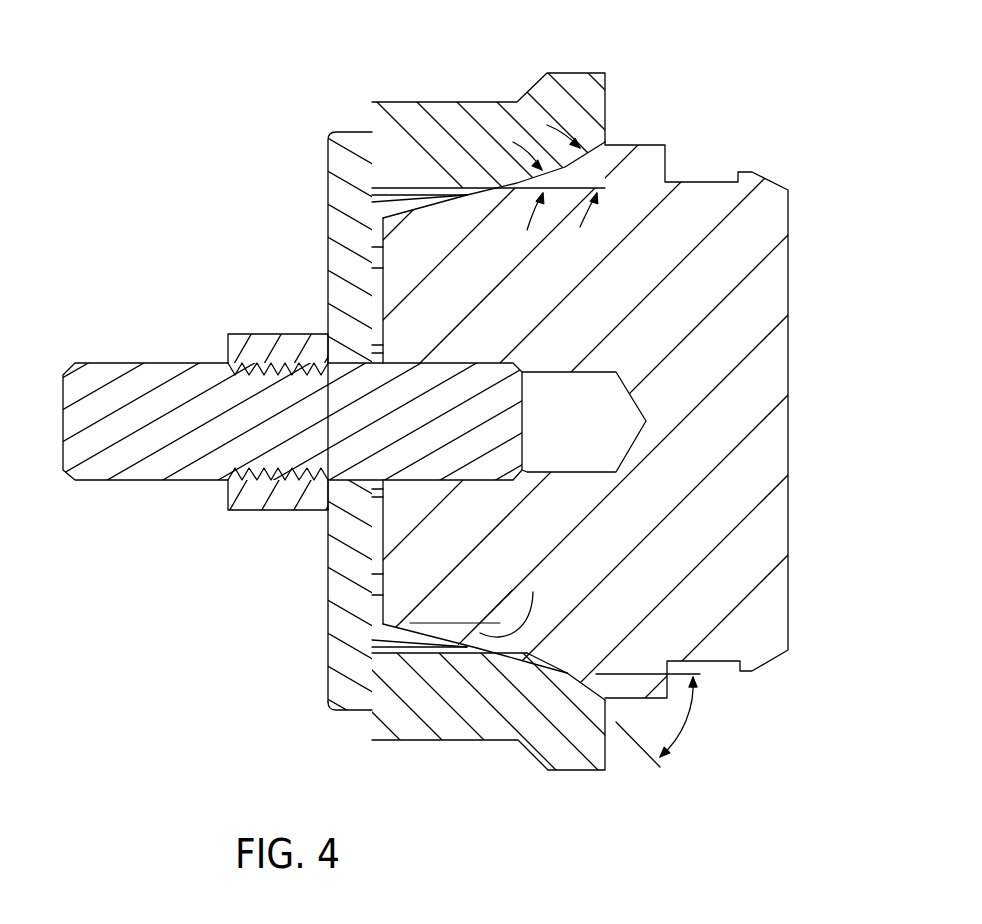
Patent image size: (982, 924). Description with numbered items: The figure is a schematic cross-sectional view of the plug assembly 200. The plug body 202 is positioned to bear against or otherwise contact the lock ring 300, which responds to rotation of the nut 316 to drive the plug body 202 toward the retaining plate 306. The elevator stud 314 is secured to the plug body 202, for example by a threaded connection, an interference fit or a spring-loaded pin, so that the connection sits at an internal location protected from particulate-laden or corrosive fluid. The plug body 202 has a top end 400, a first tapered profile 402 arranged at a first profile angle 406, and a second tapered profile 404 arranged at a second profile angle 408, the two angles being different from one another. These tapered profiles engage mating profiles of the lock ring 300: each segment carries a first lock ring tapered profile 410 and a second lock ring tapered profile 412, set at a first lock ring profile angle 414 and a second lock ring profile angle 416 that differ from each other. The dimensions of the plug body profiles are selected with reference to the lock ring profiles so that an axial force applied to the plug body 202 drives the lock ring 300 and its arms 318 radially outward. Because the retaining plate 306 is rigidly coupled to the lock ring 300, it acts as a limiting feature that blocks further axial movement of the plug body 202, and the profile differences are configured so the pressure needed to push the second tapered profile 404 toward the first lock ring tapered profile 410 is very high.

The plug assembly 200 is at (172, 190).
The plug body 202 is at (768, 300).
The lock ring 300 is at (385, 48).
The retaining plate 306 is at (345, 633).
The elevator stud 314 is at (122, 390).
The nut 316 is at (263, 348).
The arms 318 is at (605, 73).
The top end 400 is at (472, 656).
The first tapered profile 402 is at (527, 653).
The second tapered profile 404 is at (587, 688).
The first profile angle 406 is at (480, 620).
The second profile angle 408 is at (688, 720).
The first lock ring tapered profile 410 is at (525, 178).
The second lock ring tapered profile 412 is at (587, 153).
The first lock ring profile angle 414 is at (540, 184).
The second lock ring profile angle 416 is at (588, 170).